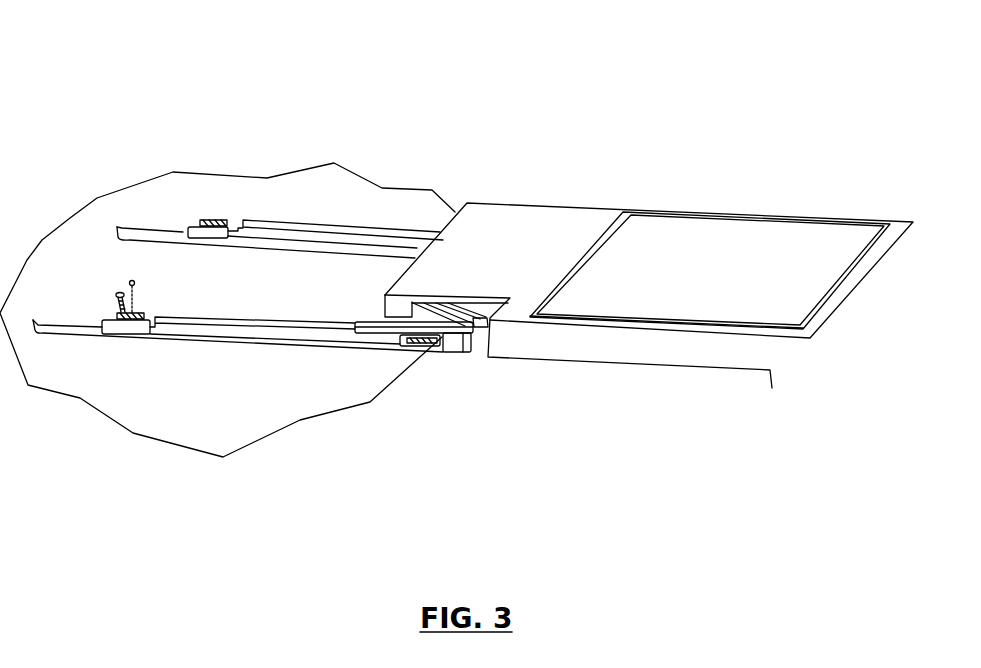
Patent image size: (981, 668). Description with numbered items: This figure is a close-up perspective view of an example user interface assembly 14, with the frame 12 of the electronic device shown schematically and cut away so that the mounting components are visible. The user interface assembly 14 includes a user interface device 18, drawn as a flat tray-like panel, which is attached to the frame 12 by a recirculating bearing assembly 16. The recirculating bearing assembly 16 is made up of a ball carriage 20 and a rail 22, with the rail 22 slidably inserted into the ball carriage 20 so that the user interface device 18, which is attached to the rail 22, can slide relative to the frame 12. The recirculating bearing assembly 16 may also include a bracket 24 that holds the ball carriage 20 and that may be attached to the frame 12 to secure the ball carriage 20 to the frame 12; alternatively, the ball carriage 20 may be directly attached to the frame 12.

The frame 12 is at (235, 290).
The user interface assembly 14 is at (649, 207).
The recirculating bearing assembly 16 is at (458, 368).
The user interface device 18 is at (682, 240).
The ball carriage 20 is at (446, 349).
The rail 22 is at (483, 336).
The bracket 24 is at (337, 338).